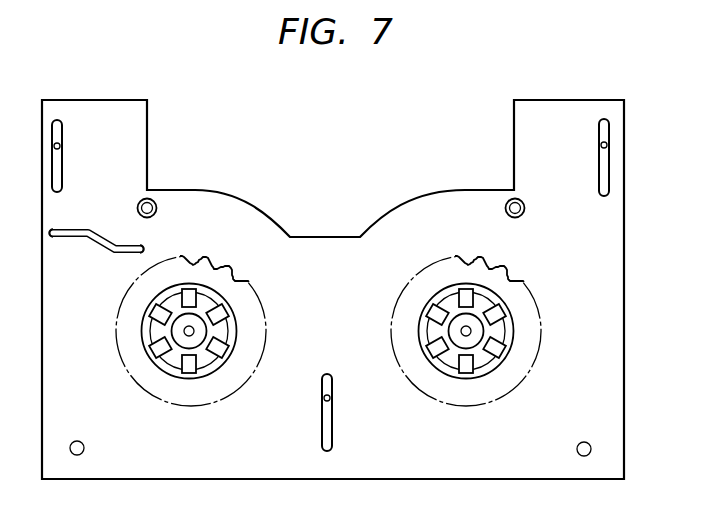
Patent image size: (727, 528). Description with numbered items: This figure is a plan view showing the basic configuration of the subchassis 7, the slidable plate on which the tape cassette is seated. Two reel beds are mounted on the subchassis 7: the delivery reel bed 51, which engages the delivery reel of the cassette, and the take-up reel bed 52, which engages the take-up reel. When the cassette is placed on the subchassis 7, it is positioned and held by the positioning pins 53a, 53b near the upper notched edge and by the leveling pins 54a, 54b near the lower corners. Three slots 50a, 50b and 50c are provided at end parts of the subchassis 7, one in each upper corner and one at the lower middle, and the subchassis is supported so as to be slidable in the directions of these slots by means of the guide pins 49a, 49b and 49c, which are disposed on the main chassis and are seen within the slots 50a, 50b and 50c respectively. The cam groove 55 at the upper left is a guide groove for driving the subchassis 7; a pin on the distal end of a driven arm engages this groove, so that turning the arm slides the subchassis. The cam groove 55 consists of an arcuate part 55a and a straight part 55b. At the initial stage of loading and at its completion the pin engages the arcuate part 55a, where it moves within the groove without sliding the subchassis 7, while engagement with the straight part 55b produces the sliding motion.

The subchassis 7 is at (510, 472).
The guide pin 49a is at (60, 146).
The guide pin 49b is at (332, 398).
The guide pin 49c is at (607, 146).
The slot 50a is at (60, 188).
The slot 50b is at (327, 452).
The slot 50c is at (608, 122).
The delivery reel bed 51 is at (266, 318).
The take-up reel bed 52 is at (542, 316).
The positioning pin 53a is at (512, 198).
The positioning pin 53b is at (150, 198).
The leveling pin 54a is at (77, 455).
The leveling pin 54b is at (584, 456).
The cam groove 55 is at (100, 252).
The arcuate part 55a is at (145, 247).
The straight part 55b is at (78, 230).